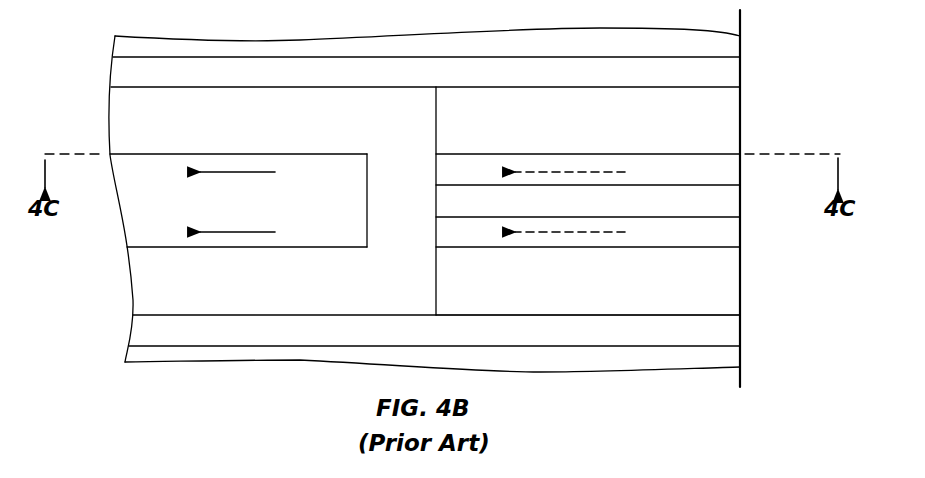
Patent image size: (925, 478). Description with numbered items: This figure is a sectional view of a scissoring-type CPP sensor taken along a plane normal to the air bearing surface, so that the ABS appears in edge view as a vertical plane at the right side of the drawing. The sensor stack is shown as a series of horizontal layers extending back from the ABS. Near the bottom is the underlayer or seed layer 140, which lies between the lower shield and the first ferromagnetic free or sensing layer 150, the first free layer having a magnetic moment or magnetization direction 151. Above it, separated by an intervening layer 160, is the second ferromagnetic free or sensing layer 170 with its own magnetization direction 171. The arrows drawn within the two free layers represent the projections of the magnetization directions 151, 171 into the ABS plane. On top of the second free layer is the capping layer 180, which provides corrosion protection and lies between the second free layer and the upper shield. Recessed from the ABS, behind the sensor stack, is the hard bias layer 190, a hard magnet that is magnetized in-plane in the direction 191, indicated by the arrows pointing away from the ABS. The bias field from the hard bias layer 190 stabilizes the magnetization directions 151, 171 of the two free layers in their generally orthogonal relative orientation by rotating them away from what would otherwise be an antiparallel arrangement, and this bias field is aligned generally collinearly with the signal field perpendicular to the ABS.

The air bearing surface ABS is at (741, 17).
The seed layer 140 is at (722, 264).
The first ferromagnetic free layer 150 is at (722, 230).
The magnetization direction of FL1 151 is at (532, 228).
The spacer layer 160 is at (722, 202).
The second ferromagnetic free layer 170 is at (722, 170).
The magnetization direction of FL2 171 is at (532, 168).
The capping layer 180 is at (722, 122).
The hard bias layer 190 is at (135, 228).
The magnetization direction of hard bias layer 191 is at (270, 172).